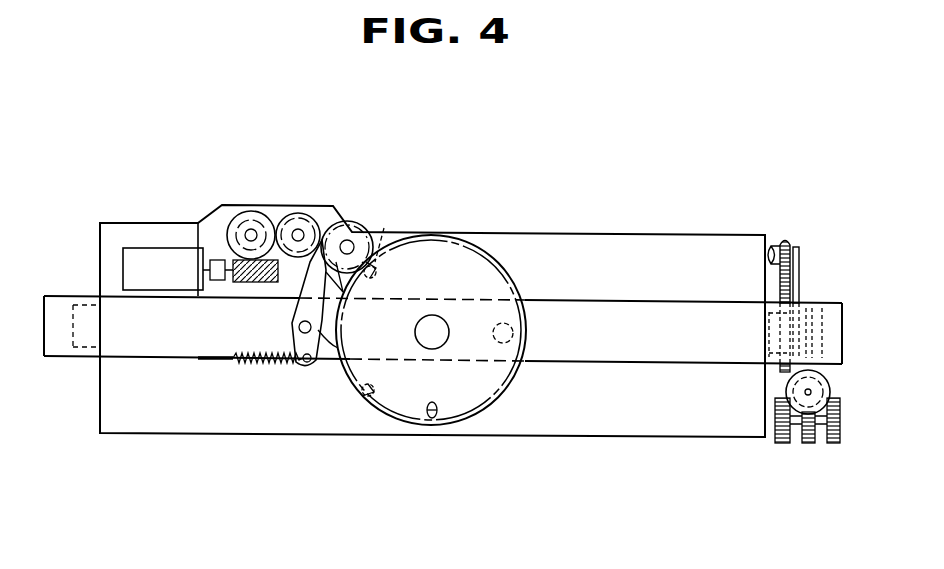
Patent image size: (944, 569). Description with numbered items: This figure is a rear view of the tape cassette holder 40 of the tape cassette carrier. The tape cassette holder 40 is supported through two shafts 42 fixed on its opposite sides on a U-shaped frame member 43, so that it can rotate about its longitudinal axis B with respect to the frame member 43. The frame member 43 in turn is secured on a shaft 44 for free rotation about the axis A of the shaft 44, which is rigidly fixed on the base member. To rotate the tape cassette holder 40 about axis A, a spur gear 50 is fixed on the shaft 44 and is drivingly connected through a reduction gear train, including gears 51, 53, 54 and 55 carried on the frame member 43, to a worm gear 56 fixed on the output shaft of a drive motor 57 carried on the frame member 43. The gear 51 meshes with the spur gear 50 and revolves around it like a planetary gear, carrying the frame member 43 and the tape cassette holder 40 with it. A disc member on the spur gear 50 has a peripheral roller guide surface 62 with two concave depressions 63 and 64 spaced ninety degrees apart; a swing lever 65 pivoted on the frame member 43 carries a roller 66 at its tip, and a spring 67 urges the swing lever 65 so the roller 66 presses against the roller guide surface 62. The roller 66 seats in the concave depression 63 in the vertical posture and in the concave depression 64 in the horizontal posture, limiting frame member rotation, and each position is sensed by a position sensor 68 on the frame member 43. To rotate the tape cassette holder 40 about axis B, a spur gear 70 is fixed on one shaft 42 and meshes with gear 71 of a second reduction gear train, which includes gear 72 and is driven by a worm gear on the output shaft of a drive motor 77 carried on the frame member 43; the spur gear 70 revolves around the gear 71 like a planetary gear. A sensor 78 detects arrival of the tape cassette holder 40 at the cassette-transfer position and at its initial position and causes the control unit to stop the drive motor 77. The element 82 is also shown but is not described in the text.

The tape cassette holder 40 is at (632, 250).
The shaft 42 is at (765, 363).
The frame member 43 is at (628, 347).
The shaft 44 is at (437, 323).
The spur gear 50 is at (437, 250).
The gear 51 is at (356, 222).
The gear 53 is at (298, 214).
The gear 54 is at (260, 211).
The gear 55 is at (236, 258).
The worm gear 56 is at (193, 358).
The drive motor 57 is at (147, 262).
The roller guide surface 62 is at (338, 346).
The concave depression 63 is at (368, 397).
The concave depression 64 is at (376, 278).
The swing lever 65 is at (292, 310).
The roller 66 is at (384, 228).
The spring 67 is at (268, 362).
The position sensor 68 is at (501, 343).
The spur gear 70 is at (785, 238).
The gear 71 is at (782, 443).
The gear 72 is at (805, 445).
The drive motor 77 is at (824, 320).
The sensor 78 is at (765, 308).
The bar 82 is at (796, 247).